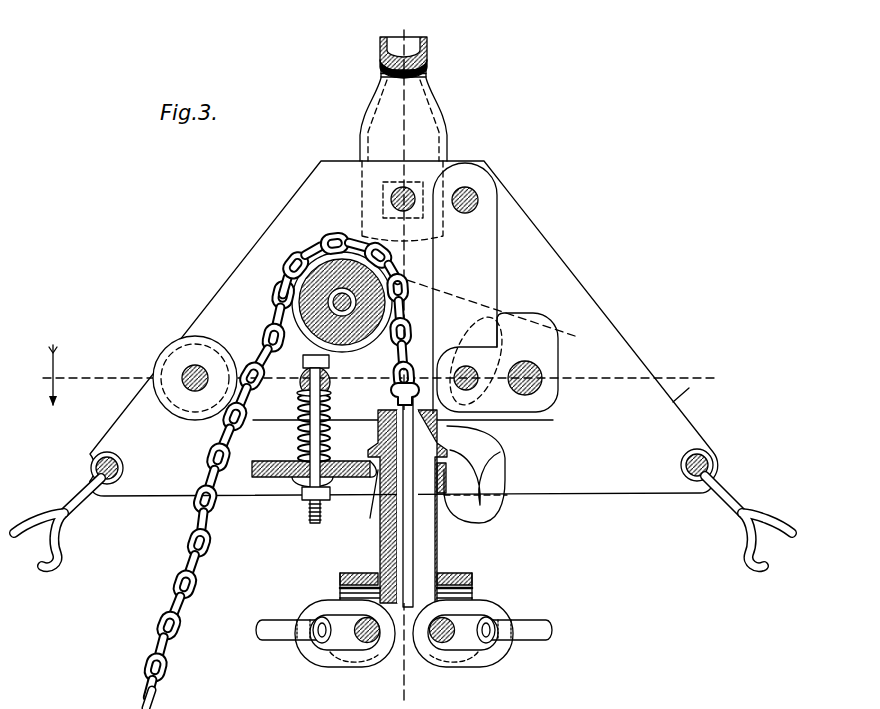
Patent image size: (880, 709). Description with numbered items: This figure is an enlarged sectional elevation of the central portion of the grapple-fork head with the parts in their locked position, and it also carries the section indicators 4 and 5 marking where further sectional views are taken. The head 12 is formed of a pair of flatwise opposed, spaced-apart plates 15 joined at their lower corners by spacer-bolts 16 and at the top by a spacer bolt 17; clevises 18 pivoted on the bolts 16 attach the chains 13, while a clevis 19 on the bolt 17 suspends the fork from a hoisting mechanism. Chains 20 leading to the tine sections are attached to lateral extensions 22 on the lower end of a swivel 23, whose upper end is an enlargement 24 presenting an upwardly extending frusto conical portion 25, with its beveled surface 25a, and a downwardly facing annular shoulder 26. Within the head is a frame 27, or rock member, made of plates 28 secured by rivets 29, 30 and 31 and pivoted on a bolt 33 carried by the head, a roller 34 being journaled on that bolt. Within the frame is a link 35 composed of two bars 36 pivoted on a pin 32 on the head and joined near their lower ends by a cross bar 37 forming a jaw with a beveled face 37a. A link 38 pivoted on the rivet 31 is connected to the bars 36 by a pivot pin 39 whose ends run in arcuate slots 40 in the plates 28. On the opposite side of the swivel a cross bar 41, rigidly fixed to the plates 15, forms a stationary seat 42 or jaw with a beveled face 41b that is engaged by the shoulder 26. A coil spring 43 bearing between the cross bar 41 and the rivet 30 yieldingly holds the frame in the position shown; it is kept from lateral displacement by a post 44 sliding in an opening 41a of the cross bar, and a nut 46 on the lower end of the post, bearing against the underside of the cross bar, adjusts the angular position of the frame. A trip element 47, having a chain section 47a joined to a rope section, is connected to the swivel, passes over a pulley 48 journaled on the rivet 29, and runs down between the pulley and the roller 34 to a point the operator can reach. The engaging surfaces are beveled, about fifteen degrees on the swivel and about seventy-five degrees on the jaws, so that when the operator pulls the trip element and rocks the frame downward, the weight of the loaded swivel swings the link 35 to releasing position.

The section line 4- 4 is at (369, 375).
The section line 5- 5 is at (440, 25).
The head 12 is at (298, 188).
The chains 13 is at (50, 566).
The plates 15 is at (690, 388).
The spacer-bolts 16 is at (96, 462).
The spacer bolt 17 is at (407, 188).
The clevises 18 is at (80, 494).
The clevis 19 is at (424, 108).
The chains 20 is at (284, 627).
The lateral extensions 22 is at (357, 576).
The swivel 23 is at (438, 548).
The enlargement 24 is at (495, 426).
The frusto conical portion 25 is at (377, 407).
The surface 25a is at (480, 449).
The annular shoulder 26 is at (447, 460).
The frame 27 is at (260, 291).
The plates 28 is at (258, 320).
The rivet 29 is at (333, 299).
The rivet 30 is at (330, 385).
The rivet 31 is at (545, 384).
The pin 32 is at (474, 190).
The bolt 33 is at (185, 372).
The roller 34 is at (173, 345).
The link 35 is at (480, 243).
The bars 36 is at (484, 276).
The cross bar 37 is at (450, 512).
The beveled surface 37a is at (475, 484).
The link 38 is at (541, 368).
The pivot pin 39 is at (474, 370).
The arcuate slots 40 is at (478, 350).
The cross bar 41 is at (352, 440).
The opening 41a is at (283, 483).
The beveled surface 41b is at (367, 458).
The stationary seat 42 is at (370, 518).
The coil spring 43 is at (300, 437).
The post 44 is at (303, 407).
The nut 46 is at (297, 487).
The trip element 47 is at (378, 248).
The chain section 47a is at (176, 600).
The pulley 48 is at (328, 263).